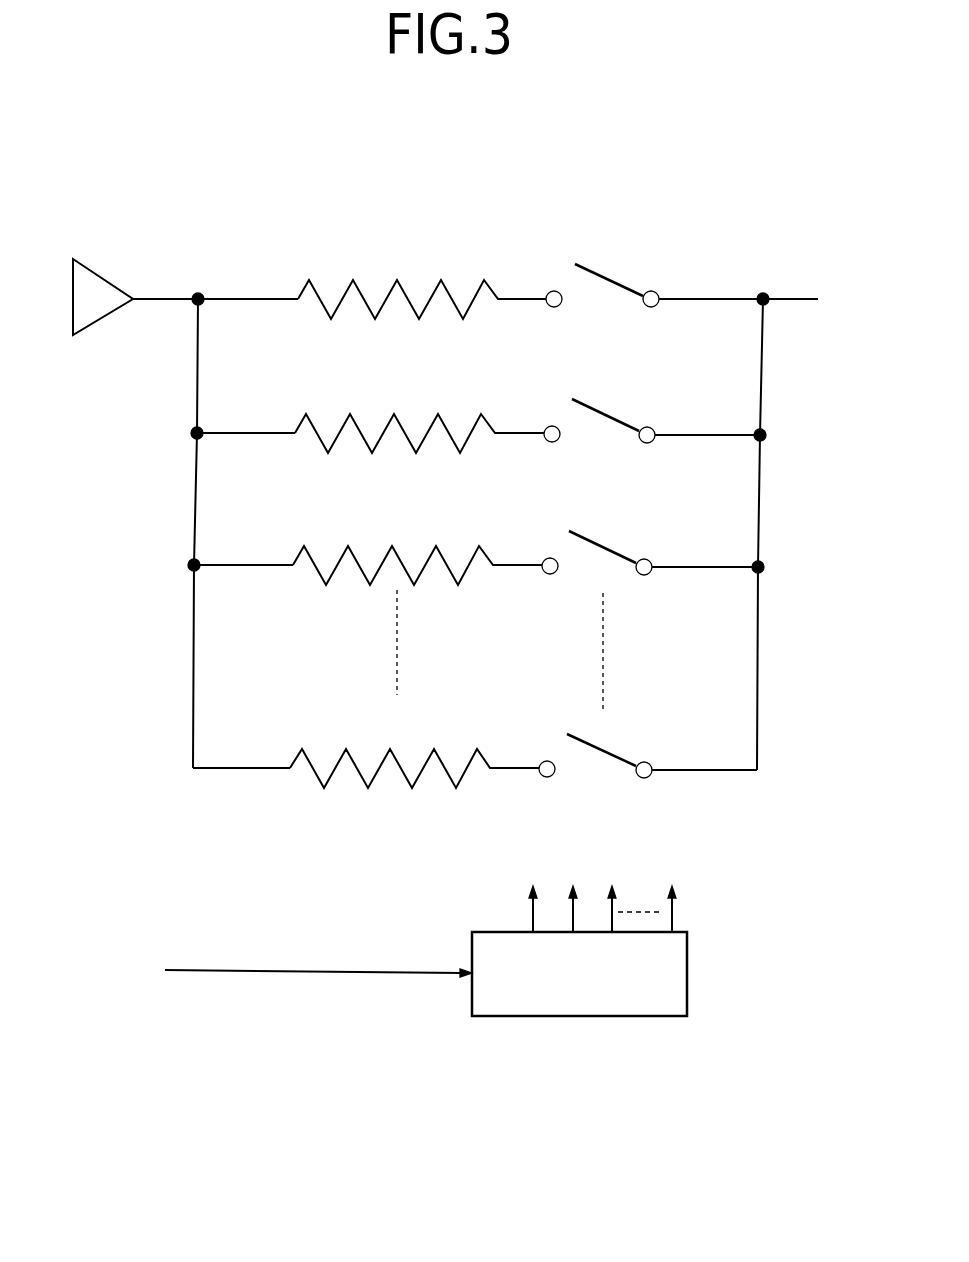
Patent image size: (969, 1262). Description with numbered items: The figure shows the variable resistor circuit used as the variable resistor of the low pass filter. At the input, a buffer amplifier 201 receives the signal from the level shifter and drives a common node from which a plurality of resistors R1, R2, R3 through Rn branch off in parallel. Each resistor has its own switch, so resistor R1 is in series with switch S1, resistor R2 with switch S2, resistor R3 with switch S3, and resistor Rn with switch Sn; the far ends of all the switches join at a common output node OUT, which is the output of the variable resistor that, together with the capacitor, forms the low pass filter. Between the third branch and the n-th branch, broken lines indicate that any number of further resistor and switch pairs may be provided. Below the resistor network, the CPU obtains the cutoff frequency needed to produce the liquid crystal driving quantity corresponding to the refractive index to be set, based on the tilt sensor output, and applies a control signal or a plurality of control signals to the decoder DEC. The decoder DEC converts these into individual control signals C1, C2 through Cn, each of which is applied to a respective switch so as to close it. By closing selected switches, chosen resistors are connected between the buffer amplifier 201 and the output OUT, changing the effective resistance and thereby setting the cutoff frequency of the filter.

The buffer amplifier 201 is at (115, 313).
The resistor R1 is at (380, 272).
The resistor R2 is at (378, 410).
The resistor R3 is at (376, 541).
The resistor Rn is at (374, 745).
The switch S1 is at (669, 267).
The switch S2 is at (666, 407).
The switch S3 is at (663, 539).
The switch Sn is at (662, 741).
The decoder DEC is at (575, 1016).
The control signal C1 is at (526, 892).
The control signal C2 is at (574, 892).
The control signal Cn is at (669, 892).
The element CPU is at (318, 955).
The output OUT is at (800, 284).